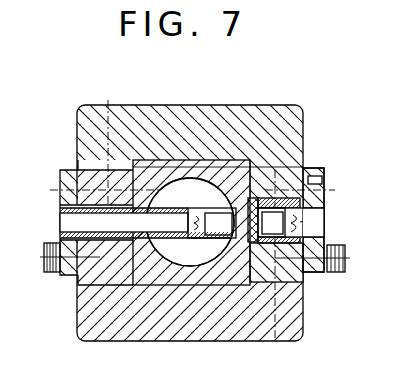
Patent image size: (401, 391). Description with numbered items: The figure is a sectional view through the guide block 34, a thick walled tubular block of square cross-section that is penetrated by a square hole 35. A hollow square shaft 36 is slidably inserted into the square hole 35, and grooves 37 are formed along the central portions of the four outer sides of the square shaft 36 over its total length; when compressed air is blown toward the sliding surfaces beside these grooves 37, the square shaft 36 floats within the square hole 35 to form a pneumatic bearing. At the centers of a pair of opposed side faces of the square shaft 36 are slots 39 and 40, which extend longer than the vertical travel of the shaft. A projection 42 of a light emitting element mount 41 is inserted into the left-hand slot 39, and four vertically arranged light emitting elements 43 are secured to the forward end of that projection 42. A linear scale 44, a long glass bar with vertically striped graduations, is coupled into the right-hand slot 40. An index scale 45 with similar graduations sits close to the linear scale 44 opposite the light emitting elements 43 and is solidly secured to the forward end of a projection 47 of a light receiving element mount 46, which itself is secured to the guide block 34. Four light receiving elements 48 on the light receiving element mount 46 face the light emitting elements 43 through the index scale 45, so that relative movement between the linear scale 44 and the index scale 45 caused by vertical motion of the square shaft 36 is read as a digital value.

The guide block 34 is at (273, 118).
The square hole 35 is at (233, 160).
The square shaft 36 is at (248, 172).
The grooves 37 is at (110, 177).
The slot 39 is at (118, 258).
The slot 40 is at (238, 288).
The light emitting element mount 41 is at (60, 214).
The projection 42 is at (176, 238).
The light emitting elements 43 is at (222, 210).
The linear scale 44 is at (278, 285).
The index scale 45 is at (278, 252).
The light receiving element mount 46 is at (324, 194).
The projection 47 is at (285, 200).
The light receiving elements 48 is at (318, 233).